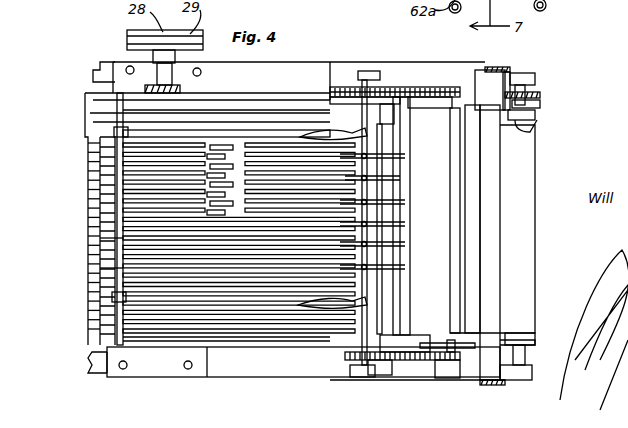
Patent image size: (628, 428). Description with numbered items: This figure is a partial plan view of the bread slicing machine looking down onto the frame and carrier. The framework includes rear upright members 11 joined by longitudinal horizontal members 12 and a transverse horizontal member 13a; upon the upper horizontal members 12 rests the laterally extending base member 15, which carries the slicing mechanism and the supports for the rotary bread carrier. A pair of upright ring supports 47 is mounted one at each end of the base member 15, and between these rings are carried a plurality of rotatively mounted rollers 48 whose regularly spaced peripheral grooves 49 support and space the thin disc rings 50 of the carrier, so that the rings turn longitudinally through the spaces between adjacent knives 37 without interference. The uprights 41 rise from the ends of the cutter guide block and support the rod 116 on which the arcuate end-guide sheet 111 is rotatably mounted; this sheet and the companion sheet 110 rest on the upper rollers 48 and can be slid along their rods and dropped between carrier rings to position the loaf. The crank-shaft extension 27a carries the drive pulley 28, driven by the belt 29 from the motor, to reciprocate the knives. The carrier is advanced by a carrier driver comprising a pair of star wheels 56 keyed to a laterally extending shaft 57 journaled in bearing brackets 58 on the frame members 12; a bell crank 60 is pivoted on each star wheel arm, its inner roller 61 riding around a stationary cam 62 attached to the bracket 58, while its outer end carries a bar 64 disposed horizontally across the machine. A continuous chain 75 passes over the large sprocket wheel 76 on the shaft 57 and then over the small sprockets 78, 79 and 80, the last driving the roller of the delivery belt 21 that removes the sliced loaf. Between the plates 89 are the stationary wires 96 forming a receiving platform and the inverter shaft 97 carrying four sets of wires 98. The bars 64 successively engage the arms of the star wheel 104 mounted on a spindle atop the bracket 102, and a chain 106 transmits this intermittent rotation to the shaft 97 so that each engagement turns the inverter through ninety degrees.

The crank-shaft extension 27a is at (150, 62).
The drive pulley 28 is at (165, 40).
The belt 29 is at (164, 67).
The uprights 41 is at (148, 72).
The rings 47 is at (90, 93).
The arcuate sheet 111 is at (95, 137).
The disc rings 50 is at (100, 213).
The knives 37 is at (100, 240).
The rod 116 is at (123, 268).
The base member 15 is at (133, 362).
The longitudinal horizontal members 12 is at (292, 219).
The rollers 48 is at (228, 106).
The arcuate sheet 110 is at (283, 132).
The bell crank 60 is at (320, 110).
The peripheral grooves 49 is at (240, 162).
The continuous chain 75 is at (327, 85).
The roller 61 is at (340, 87).
The plates 89 is at (370, 70).
The bearing brackets 58 is at (385, 97).
The stationary cam 62 is at (400, 100).
The large sprocket wheel 76 is at (432, 97).
The small sprocket 78 is at (475, 97).
The rear upright members 11 is at (502, 68).
The small sprocket 80 is at (540, 103).
The small sprocket 79 is at (535, 112).
The delivery belt 21 is at (520, 160).
The transverse horizontal member 13a is at (490, 212).
The star wheels 56 is at (427, 120).
The shaft 97 is at (405, 160).
The pins or wires 98 is at (405, 205).
The pins or wires 96 is at (405, 225).
The shaft 57 is at (405, 250).
The roller or bar 64 is at (435, 292).
The star wheel 104 is at (465, 345).
The chain 106 is at (396, 365).
The bracket 102 is at (458, 378).